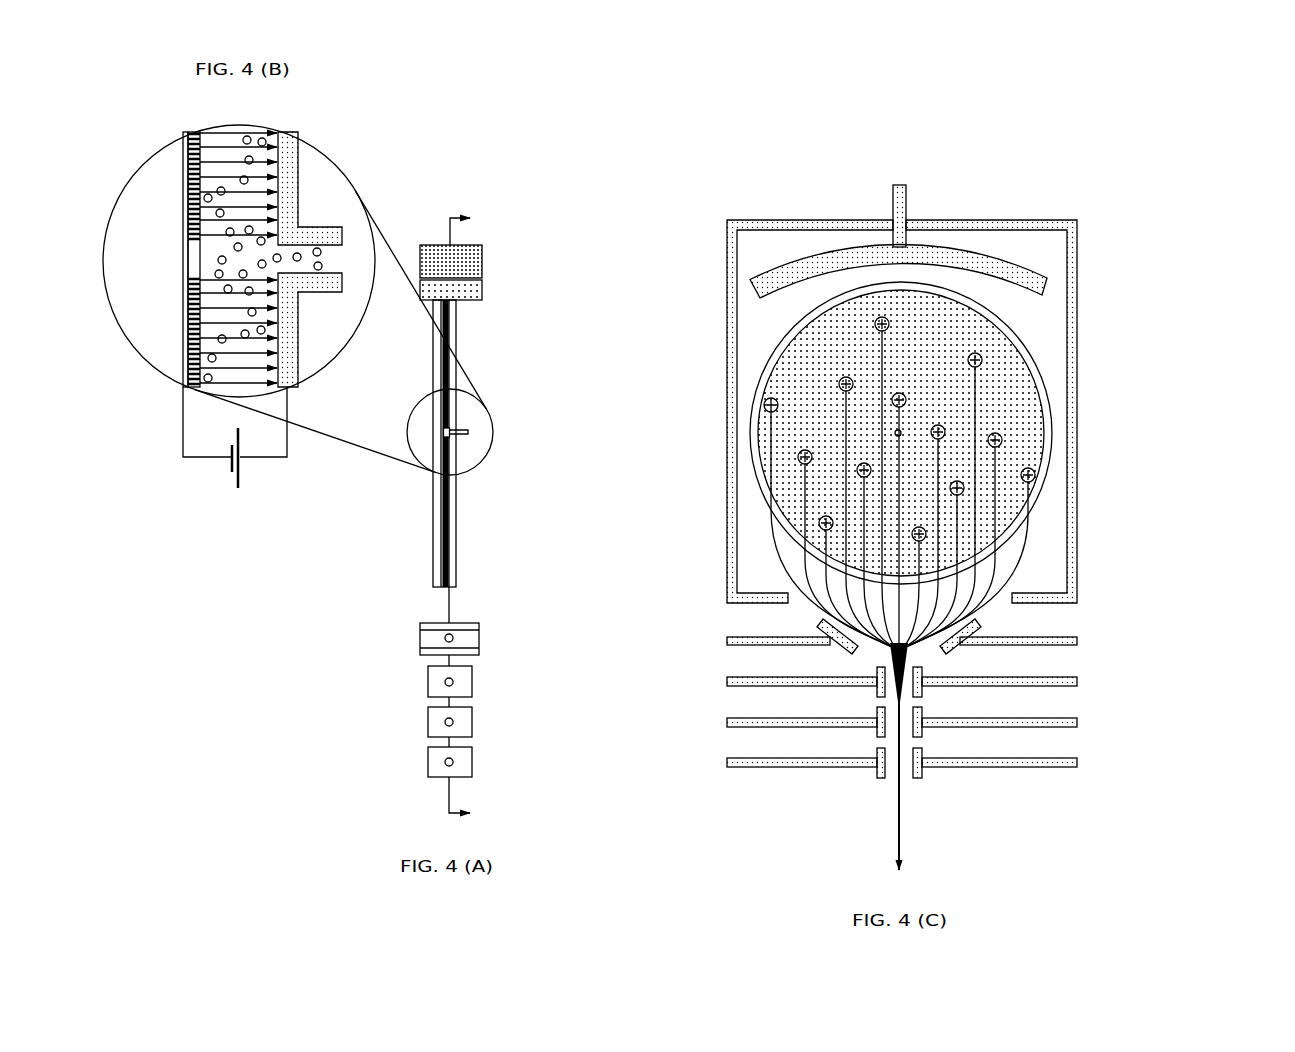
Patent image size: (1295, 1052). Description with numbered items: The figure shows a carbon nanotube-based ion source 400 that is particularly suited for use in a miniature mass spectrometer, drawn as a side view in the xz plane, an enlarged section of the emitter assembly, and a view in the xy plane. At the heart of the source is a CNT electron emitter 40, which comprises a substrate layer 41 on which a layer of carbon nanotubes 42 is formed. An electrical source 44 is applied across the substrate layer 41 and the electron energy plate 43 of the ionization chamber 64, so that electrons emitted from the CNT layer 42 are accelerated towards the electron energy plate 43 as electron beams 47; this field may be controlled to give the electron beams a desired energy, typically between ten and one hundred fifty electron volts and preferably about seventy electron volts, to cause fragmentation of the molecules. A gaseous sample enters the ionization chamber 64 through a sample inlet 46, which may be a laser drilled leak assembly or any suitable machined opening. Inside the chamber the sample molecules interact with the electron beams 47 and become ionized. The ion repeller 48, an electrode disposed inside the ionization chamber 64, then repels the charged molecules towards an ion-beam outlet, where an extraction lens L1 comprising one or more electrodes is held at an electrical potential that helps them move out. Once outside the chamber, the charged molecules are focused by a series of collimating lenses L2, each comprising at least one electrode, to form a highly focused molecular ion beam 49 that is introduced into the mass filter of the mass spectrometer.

The CNT electron emitter 40 is at (425, 560).
The substrate layer 41 is at (181, 366).
The layer of carbon nanotubes 42 is at (190, 133).
The electron energy plate 43 is at (300, 172).
The electrical source 44 is at (235, 455).
The sample inlet 46 is at (472, 433).
The electron beams 47 is at (243, 355).
The ion repeller 48 is at (541, 259).
The molecular ion beam 49 is at (899, 611).
The ionization chamber 64 is at (1083, 218).
The CNT-based ion source 400 is at (1032, 125).
The extraction lens L1 is at (558, 638).
The collimating lens L2 is at (562, 734).